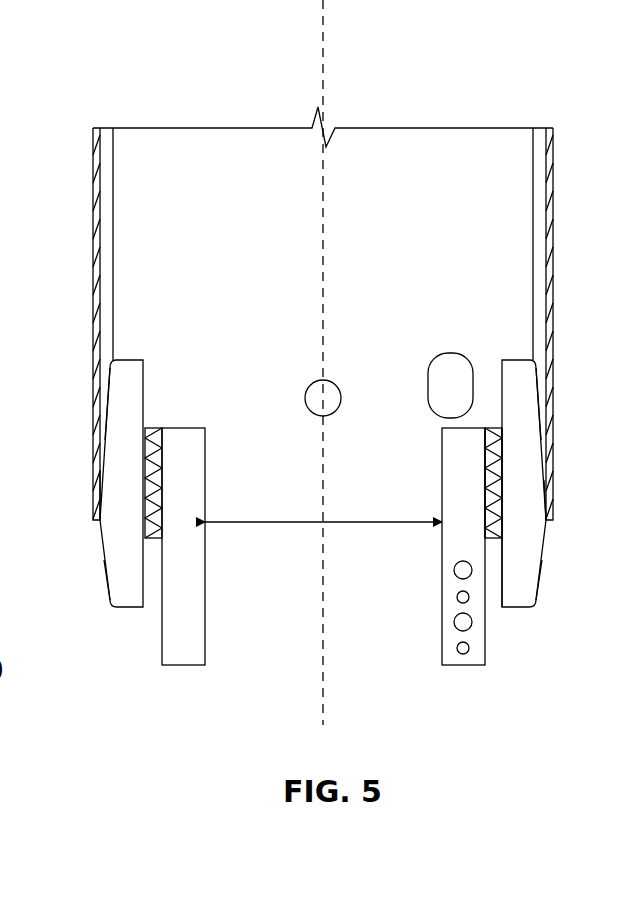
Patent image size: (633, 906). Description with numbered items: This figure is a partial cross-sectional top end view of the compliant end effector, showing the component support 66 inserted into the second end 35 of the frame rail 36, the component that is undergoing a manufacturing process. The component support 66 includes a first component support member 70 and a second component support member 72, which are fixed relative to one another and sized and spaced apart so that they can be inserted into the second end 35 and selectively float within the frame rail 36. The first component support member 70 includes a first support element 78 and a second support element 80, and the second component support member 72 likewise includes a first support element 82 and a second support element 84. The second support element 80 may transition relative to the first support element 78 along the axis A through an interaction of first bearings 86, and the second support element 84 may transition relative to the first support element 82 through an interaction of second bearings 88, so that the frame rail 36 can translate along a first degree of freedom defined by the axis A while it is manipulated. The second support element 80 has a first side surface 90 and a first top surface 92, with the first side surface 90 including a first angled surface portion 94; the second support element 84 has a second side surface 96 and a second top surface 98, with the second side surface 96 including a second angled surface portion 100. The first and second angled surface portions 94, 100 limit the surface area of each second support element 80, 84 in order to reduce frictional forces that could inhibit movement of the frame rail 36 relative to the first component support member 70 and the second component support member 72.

The second end 35 is at (553, 505).
The frame rail 36 is at (97, 240).
The component support 66 is at (445, 685).
The first component support member 70 is at (495, 625).
The second component support member 72 is at (133, 625).
The first support element 78 is at (440, 523).
The second support element 80 is at (513, 358).
The first support element 82 is at (207, 523).
The second support element 84 is at (146, 370).
The first bearings 86 is at (490, 452).
The second bearings 88 is at (152, 445).
The first side surface 90 is at (541, 565).
The first top surface 92 is at (542, 463).
The first angled surface portion 94 is at (548, 495).
The second side surface 96 is at (103, 385).
The second top surface 98 is at (112, 590).
The second angled surface portion 100 is at (97, 500).
The axis A is at (323, 662).